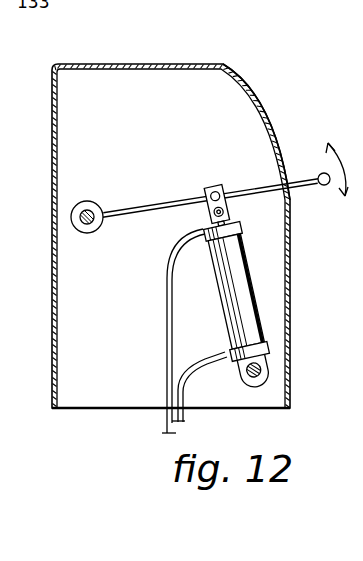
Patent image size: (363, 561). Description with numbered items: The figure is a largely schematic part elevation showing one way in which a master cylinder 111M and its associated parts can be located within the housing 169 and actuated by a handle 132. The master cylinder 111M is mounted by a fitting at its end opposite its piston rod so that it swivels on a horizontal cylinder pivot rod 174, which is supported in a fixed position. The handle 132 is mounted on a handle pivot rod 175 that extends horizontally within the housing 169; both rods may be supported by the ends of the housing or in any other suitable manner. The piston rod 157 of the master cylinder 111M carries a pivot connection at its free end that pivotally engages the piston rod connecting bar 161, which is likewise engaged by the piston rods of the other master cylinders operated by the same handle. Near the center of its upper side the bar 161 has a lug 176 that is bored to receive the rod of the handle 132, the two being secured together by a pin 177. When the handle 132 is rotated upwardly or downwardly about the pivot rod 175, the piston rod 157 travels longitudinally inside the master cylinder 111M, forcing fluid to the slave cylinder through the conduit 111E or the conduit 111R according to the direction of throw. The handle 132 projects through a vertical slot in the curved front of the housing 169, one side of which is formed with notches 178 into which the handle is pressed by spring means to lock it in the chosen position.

The housing 169 is at (150, 65).
The notches 178 is at (250, 92).
The handle pivot rod 175 is at (100, 210).
The lug 176 is at (212, 187).
The pin 177 is at (224, 194).
The piston rod connecting bar 161 is at (224, 212).
The piston rod 157 is at (206, 228).
The master cylinder 111M is at (245, 292).
The conduit 111R is at (170, 280).
The conduit 111E is at (215, 360).
The cylinder pivot rod 174 is at (253, 380).
The handle 132 is at (332, 185).